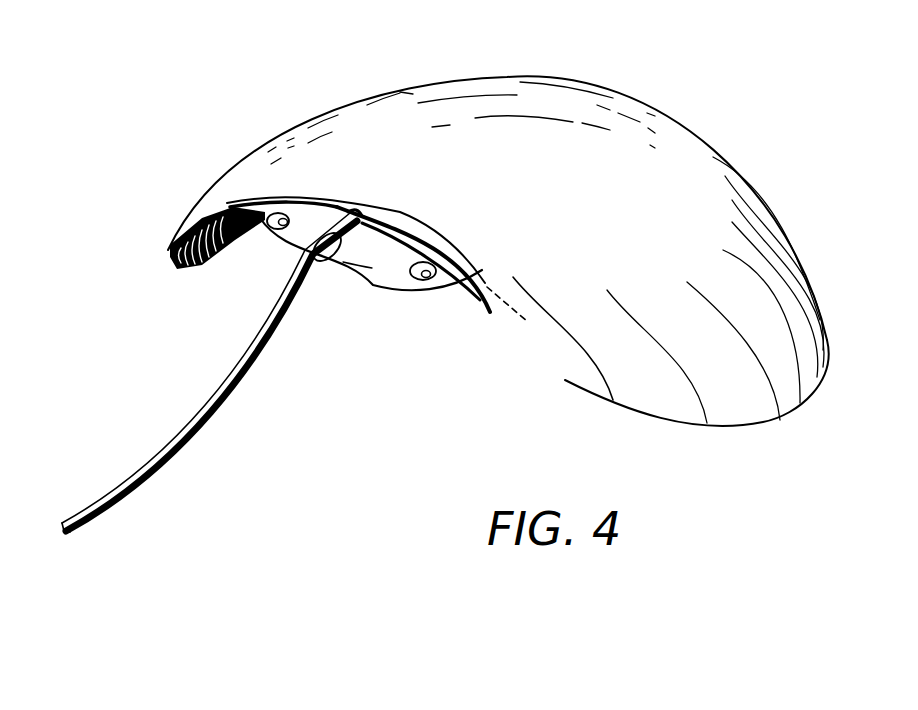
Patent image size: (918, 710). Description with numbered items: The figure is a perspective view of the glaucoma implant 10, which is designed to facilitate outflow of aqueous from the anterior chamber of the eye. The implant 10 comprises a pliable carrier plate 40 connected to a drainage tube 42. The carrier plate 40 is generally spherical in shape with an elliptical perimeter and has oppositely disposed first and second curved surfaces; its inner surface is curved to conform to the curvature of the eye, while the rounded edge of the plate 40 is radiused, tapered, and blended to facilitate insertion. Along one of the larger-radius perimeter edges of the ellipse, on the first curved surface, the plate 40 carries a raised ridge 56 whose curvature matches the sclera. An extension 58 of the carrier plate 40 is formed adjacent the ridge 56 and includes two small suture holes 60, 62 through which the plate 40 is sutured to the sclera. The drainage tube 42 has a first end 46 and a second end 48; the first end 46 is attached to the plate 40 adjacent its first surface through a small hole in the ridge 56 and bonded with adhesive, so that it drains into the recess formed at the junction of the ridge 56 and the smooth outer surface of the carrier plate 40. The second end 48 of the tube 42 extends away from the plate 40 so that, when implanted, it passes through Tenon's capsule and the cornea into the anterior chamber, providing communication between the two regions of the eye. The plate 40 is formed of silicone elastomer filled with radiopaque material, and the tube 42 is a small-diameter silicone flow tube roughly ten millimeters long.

The implant 10 is at (203, 62).
The carrier plate 40 is at (758, 217).
The drainage tube 42 is at (190, 423).
The first end 46 is at (350, 206).
The second end 48 is at (72, 531).
The raised ridge 56 is at (477, 298).
The extension 58 is at (370, 268).
The suture hole 60 is at (436, 288).
The suture hole 62 is at (262, 222).